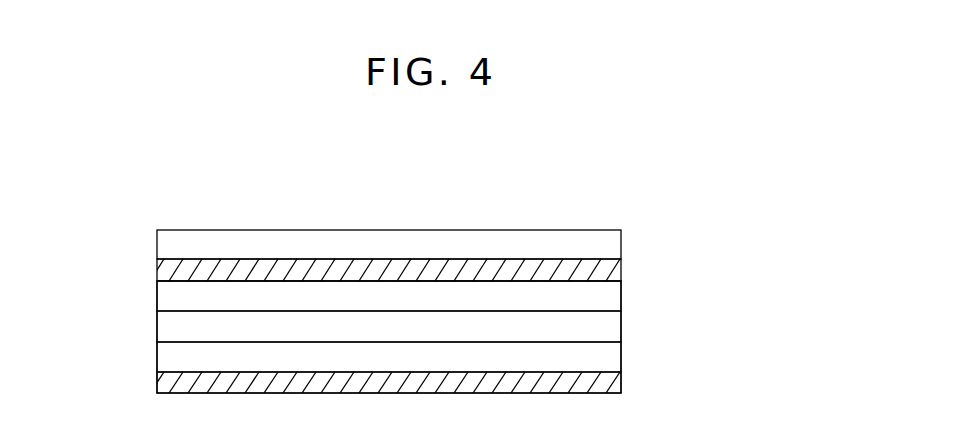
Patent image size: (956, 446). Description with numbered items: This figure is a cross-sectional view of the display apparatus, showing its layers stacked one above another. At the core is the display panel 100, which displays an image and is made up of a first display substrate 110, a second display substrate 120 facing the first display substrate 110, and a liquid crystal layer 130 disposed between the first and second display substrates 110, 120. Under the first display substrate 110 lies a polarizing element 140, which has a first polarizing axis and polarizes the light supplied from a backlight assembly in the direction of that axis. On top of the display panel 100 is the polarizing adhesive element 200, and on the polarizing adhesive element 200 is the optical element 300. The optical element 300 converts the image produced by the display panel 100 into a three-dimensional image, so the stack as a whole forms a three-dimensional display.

The optical element 300 is at (621, 244).
The polarizing adhesive element 200 is at (621, 273).
The second display substrate 120 is at (621, 303).
The liquid crystal layer 130 is at (621, 330).
The first display substrate 110 is at (621, 361).
The polarizing element 140 is at (621, 388).
The display panel 100 is at (708, 292).